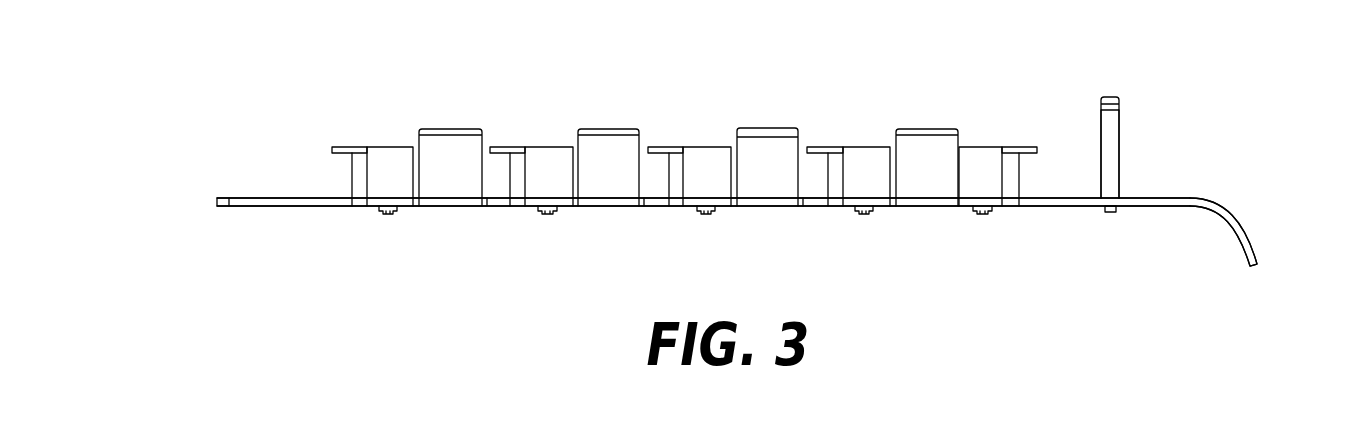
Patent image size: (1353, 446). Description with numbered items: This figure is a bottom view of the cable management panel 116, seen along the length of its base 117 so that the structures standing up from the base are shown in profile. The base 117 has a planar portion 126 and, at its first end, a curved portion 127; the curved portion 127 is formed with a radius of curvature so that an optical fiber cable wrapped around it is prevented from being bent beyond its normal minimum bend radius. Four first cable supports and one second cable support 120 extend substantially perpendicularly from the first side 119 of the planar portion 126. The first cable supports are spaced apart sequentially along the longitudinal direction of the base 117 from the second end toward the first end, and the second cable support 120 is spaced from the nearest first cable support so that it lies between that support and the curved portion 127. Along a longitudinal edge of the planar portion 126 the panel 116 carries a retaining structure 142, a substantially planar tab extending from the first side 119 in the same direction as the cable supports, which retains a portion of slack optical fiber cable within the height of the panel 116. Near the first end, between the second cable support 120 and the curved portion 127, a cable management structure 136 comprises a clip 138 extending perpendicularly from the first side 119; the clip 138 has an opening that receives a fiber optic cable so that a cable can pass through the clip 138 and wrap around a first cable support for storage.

The cable management panel 116 is at (680, 154).
The base portion 117 is at (1052, 208).
The first side of the base 119 is at (300, 189).
The second cable support 120 is at (988, 169).
The planar portion 126 is at (267, 203).
The curved portion 127 is at (1230, 213).
The cable management structure 136 is at (1131, 91).
The clip 138 is at (1111, 142).
The retaining structure 142 is at (775, 133).